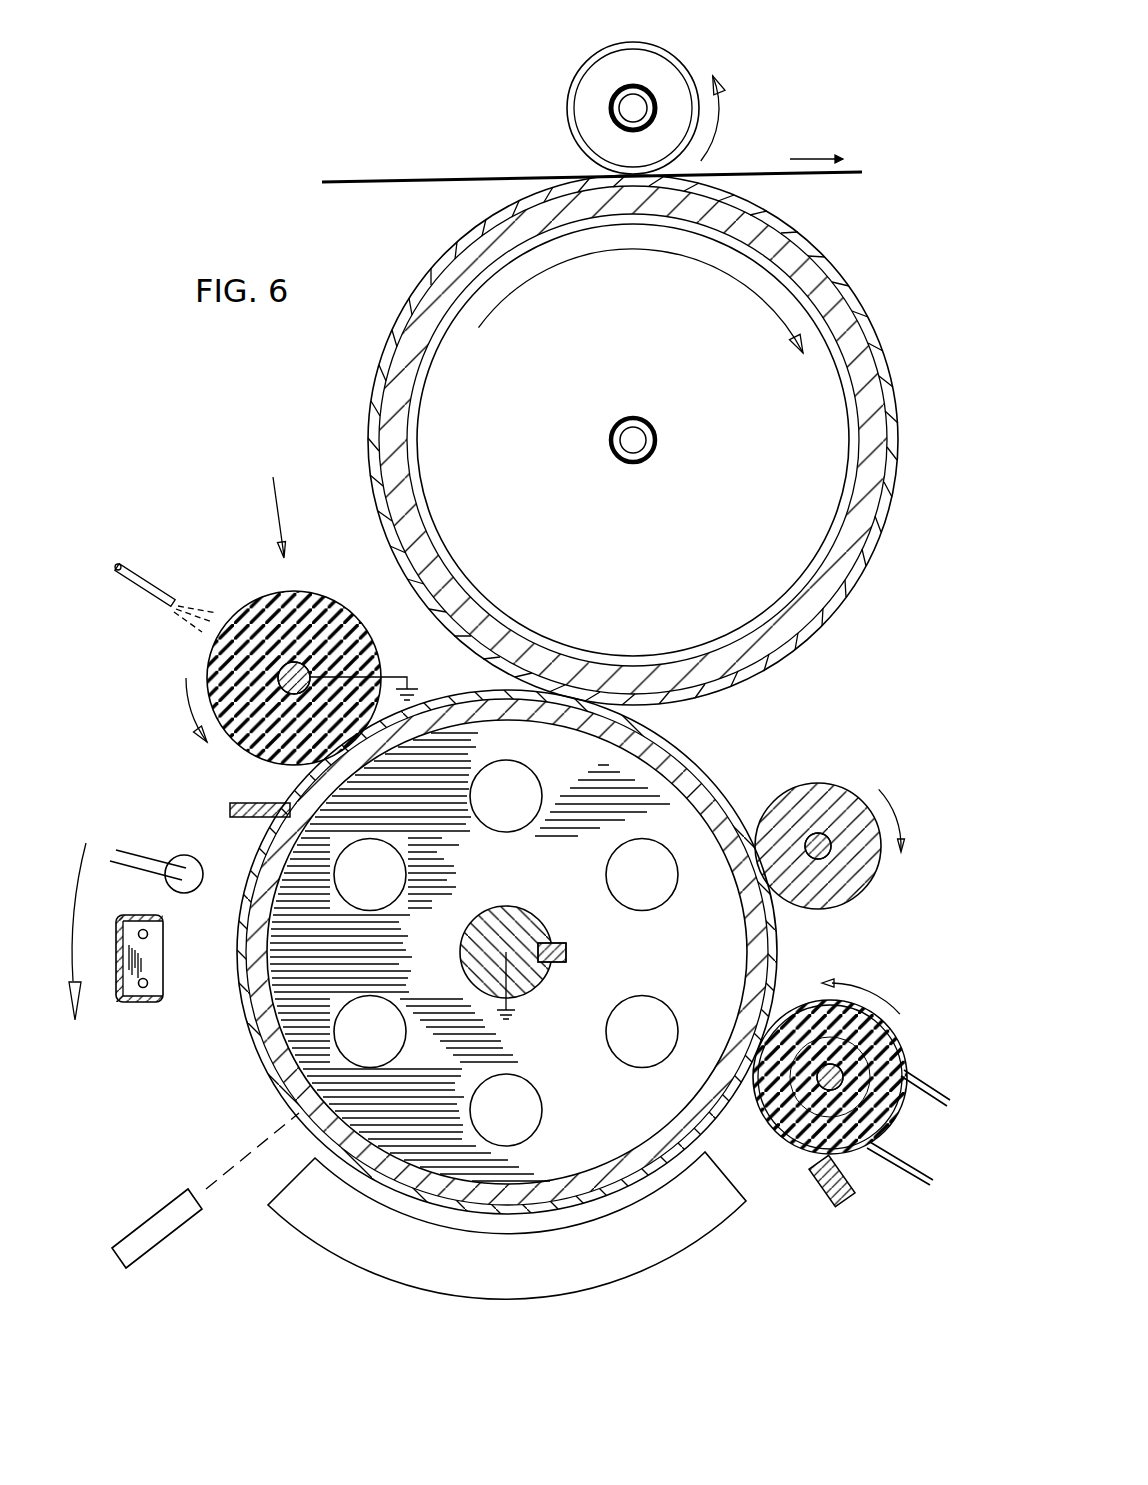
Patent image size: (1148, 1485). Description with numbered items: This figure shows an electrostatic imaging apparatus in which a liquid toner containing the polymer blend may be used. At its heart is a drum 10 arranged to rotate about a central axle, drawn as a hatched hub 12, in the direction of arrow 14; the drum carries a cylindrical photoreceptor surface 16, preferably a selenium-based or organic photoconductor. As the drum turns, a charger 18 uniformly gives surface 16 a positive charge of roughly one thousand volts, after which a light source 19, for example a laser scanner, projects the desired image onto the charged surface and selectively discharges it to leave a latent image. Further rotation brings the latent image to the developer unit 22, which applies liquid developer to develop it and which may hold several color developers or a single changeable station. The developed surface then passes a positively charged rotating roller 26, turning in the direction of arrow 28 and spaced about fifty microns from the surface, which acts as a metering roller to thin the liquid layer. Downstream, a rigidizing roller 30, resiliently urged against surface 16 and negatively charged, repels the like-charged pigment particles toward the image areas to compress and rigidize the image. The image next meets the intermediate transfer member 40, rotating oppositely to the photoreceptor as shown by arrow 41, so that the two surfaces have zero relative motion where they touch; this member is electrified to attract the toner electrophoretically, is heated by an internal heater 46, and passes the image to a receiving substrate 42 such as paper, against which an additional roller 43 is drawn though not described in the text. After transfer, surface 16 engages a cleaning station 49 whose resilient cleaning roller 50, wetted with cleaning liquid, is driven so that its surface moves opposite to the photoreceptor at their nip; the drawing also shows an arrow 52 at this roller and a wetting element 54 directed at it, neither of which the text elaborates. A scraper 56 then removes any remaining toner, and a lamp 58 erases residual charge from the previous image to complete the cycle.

The drum 10 is at (692, 785).
The grounded conductive core shaft 12 is at (542, 928).
The arrow 14 is at (79, 905).
The photoreceptor surface 16 is at (733, 801).
The charger 18 is at (163, 967).
The light source 19 is at (171, 1234).
The developer unit 22 is at (303, 1209).
The rotating roller 26 is at (810, 1003).
The arrow 28 is at (864, 987).
The rigidizing roller 30 is at (844, 795).
The intermediate transfer member 40 is at (865, 560).
The arrow 41 is at (693, 265).
The receiving substrate 42 is at (725, 172).
The pressure roller 43 is at (677, 55).
The heater 46 is at (658, 448).
The cleaning station 49 is at (267, 502).
The cleaning roller 50 is at (313, 595).
The application roller rotation arrow 52 is at (187, 705).
The release agent nozzle 54 is at (143, 567).
The scraper 56 is at (260, 802).
The lamp 58 is at (147, 852).